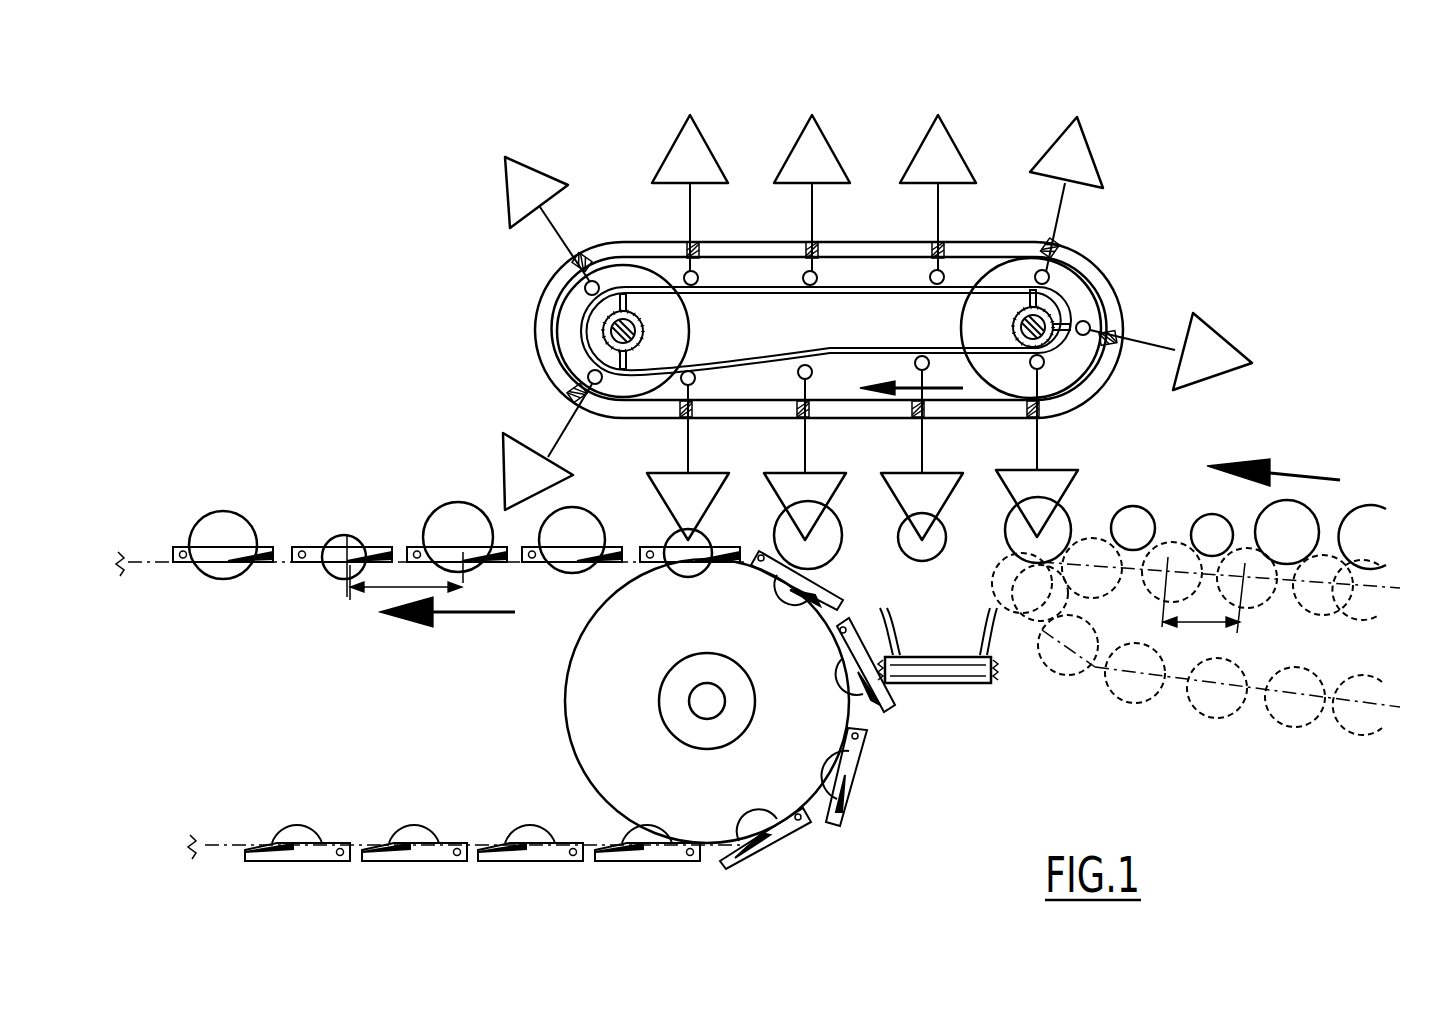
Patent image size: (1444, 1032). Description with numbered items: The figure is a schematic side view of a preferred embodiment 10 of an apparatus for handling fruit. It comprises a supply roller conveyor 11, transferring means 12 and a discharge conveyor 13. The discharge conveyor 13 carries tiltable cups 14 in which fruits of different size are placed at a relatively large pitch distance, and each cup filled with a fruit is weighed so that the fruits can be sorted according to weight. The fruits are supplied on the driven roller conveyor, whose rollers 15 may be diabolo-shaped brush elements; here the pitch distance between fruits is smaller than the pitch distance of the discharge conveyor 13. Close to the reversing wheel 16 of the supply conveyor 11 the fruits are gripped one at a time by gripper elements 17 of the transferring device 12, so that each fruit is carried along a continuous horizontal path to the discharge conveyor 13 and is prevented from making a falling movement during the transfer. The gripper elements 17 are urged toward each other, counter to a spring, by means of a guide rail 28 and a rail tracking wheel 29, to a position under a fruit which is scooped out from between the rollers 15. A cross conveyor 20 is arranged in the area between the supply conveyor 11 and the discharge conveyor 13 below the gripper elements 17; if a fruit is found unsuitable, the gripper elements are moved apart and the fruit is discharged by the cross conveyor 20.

The preferred embodiment of the apparatus 10 is at (428, 283).
The supply roller conveyor 11 is at (1285, 742).
The transferring means 12 is at (1132, 286).
The discharge conveyor 13 is at (810, 852).
The tiltable cups 14 is at (312, 557).
The rollers 15 is at (1160, 588).
The reversing wheel 16 is at (1086, 627).
The gripper elements 17 is at (788, 484).
The cross conveyor 20 is at (945, 678).
The guide rail 28 is at (958, 291).
The rail tracking wheel 29 is at (817, 280).